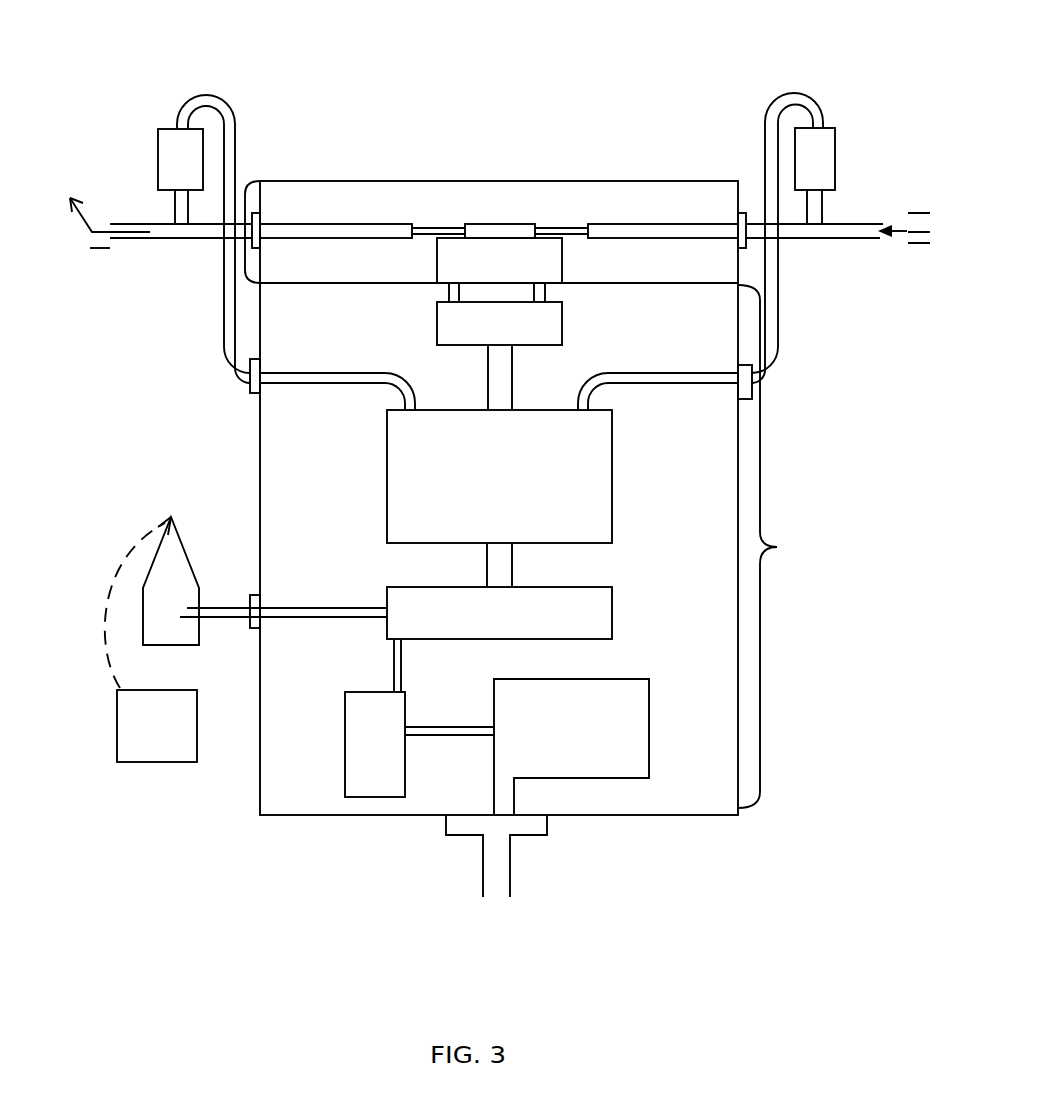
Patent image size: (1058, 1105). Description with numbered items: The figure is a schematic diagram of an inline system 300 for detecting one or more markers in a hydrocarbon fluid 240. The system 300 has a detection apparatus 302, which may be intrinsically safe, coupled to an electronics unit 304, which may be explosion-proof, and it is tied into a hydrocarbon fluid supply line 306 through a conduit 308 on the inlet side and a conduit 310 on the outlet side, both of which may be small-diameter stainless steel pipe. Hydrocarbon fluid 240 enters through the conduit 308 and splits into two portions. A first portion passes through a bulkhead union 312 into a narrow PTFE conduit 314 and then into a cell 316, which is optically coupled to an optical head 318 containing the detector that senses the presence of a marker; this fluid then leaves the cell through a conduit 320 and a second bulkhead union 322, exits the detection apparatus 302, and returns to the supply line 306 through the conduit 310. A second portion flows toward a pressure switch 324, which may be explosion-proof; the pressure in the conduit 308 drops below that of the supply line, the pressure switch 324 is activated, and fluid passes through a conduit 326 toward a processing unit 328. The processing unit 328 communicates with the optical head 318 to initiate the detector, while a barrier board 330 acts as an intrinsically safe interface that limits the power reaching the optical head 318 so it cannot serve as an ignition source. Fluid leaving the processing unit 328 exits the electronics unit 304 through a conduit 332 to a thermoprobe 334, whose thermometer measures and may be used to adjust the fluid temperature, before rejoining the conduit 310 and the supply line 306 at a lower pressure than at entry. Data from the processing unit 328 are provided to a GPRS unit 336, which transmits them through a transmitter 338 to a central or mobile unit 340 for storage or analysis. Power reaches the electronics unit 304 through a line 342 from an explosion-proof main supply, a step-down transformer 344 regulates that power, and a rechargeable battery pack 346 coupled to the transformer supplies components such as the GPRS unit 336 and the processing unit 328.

The system 300 is at (555, 61).
The detection apparatus 302 is at (236, 231).
The electronics unit 304 is at (785, 546).
The hydrocarbon fluid supply line 306 is at (90, 213).
The conduit 308 is at (808, 240).
The conduit 310 is at (157, 236).
The bulkhead union 312 is at (680, 240).
The conduit 314 is at (560, 223).
The cell 316 is at (498, 216).
The optical head 318 is at (562, 277).
The conduit 320 is at (430, 223).
The bulkhead union 322 is at (326, 223).
The pressure switch 324 is at (833, 127).
The conduit 326 is at (772, 378).
The processing unit 328 is at (612, 473).
The barrier board 330 is at (565, 324).
The conduit 332 is at (318, 366).
The thermoprobe 334 is at (165, 127).
The GPRS unit 336 is at (612, 618).
The transmitter 338 is at (190, 566).
The central or mobile unit 340 is at (173, 740).
The line 342 is at (483, 862).
The step-down transformer 344 is at (648, 717).
The rechargeable battery pack 346 is at (367, 687).
The hydrocarbon fluid 240 is at (905, 225).